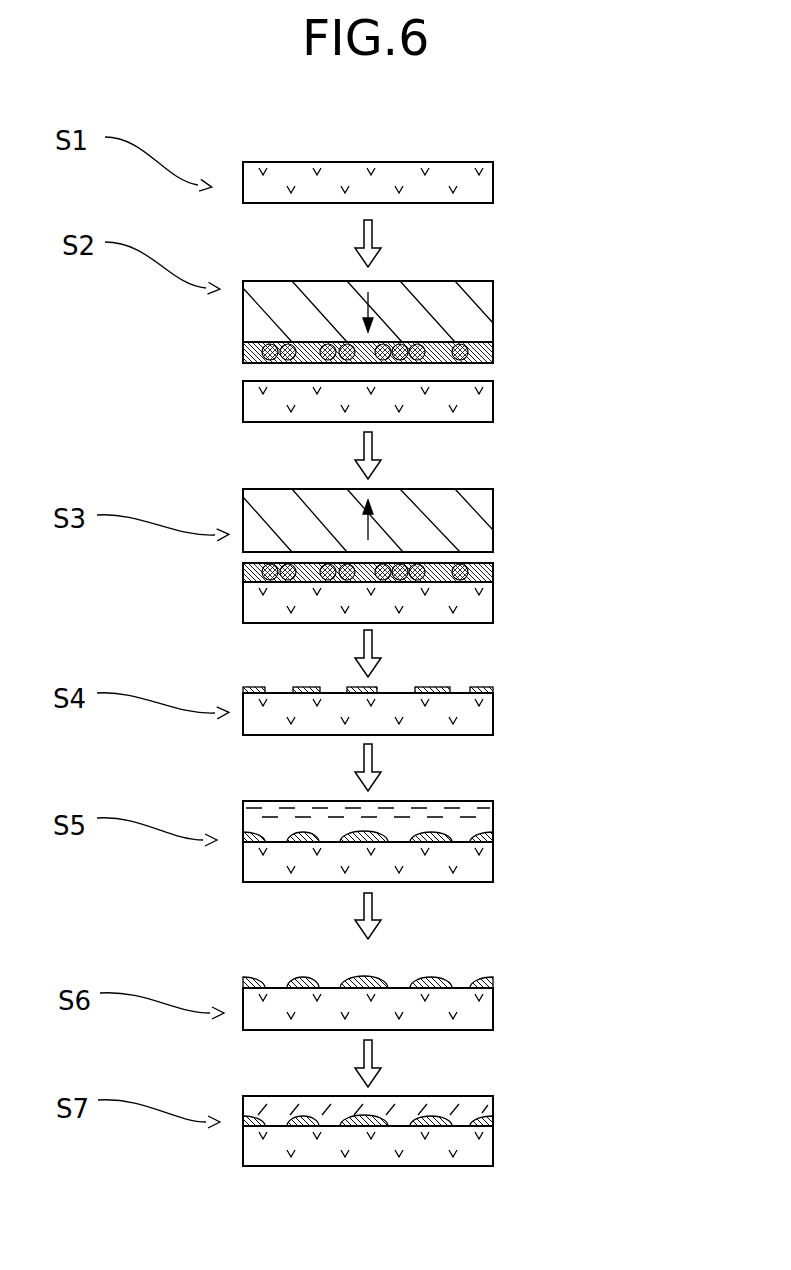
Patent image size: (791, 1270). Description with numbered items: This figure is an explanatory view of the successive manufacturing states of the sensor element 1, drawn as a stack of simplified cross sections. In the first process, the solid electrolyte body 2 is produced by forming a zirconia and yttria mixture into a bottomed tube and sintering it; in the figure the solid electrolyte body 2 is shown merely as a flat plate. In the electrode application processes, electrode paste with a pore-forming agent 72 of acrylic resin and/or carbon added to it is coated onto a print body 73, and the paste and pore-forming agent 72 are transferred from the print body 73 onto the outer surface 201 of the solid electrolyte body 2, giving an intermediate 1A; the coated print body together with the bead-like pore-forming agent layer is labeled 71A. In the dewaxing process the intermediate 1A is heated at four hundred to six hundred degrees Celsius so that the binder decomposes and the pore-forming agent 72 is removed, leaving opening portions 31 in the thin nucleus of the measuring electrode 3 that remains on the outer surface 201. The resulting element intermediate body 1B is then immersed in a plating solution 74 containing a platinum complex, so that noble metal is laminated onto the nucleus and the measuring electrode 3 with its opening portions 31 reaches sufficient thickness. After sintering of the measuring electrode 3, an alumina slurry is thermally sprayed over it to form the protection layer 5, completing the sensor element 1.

The sensor element 1 is at (433, 1142).
The intermediate 1A is at (517, 581).
The element intermediate body 1B is at (438, 693).
The solid electrolyte body 2 is at (477, 187).
The outer surface 201 is at (403, 162).
The measuring electrode 3 is at (404, 658).
The opening portions 31 is at (395, 690).
The protection layer 5 is at (472, 1105).
The transfer sheet 71A is at (392, 333).
The pore-forming agent 72 is at (243, 354).
The print body 73 is at (425, 320).
The plating solution 74 is at (462, 822).